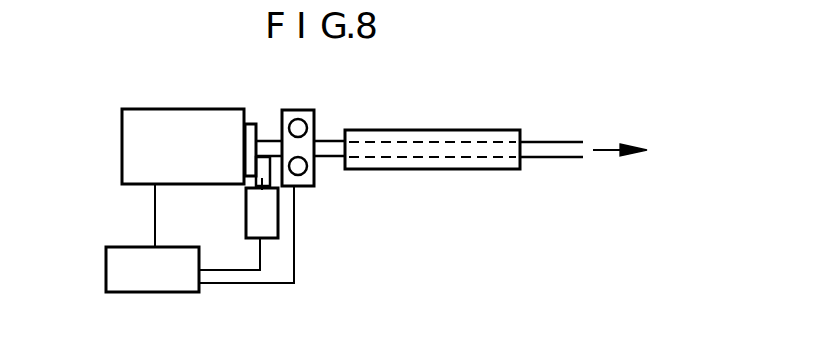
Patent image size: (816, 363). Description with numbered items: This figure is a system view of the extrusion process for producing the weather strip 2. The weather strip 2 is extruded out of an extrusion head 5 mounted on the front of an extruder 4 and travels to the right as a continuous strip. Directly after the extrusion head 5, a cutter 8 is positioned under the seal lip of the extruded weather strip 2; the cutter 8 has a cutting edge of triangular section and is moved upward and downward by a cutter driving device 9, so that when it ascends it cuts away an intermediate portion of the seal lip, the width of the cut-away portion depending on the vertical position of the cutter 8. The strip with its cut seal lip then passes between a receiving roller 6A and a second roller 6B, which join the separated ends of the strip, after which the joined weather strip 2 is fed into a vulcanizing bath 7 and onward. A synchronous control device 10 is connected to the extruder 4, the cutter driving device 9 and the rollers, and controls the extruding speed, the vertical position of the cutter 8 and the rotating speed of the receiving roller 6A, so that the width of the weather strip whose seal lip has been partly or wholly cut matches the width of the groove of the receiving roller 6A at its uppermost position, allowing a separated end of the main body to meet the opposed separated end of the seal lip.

The weather strip 2 is at (537, 141).
The extruder 4 is at (197, 128).
The extrusion head 5 is at (253, 124).
The receiving roller 6A is at (318, 122).
The roller 6B is at (304, 187).
The vulcanizing bath 7 is at (432, 131).
The cutter 8 is at (252, 190).
The cutter driving device 9 is at (264, 222).
The synchronous control device 10 is at (120, 273).